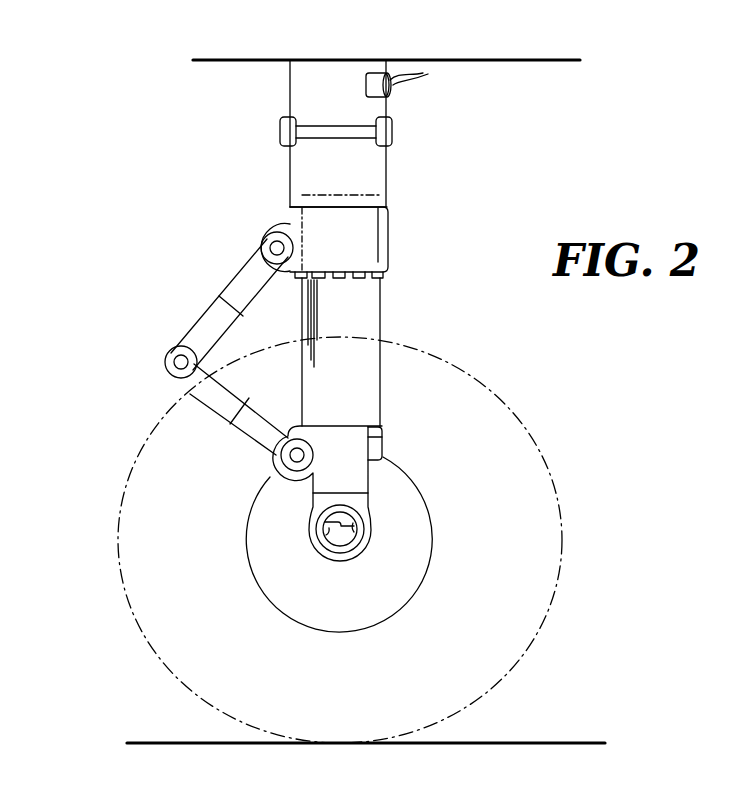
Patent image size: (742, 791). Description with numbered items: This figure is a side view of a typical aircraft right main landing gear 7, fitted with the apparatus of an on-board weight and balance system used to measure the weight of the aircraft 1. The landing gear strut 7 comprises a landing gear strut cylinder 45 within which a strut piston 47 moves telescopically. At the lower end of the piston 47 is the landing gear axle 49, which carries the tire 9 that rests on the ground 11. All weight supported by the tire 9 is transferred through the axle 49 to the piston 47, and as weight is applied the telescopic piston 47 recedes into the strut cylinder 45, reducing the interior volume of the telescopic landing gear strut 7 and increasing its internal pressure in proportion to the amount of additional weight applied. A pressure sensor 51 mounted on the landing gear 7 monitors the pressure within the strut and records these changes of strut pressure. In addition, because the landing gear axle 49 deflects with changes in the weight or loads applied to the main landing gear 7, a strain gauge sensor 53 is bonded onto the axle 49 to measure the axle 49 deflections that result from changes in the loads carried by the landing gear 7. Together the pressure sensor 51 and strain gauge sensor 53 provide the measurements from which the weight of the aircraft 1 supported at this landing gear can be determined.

The aircraft 1 is at (250, 58).
The landing gear strut cylinder 45 is at (299, 96).
The right main landing gear 7 is at (284, 150).
The pressure sensor 51 is at (390, 97).
The strut piston 47 is at (383, 298).
The landing gear axle 49 is at (312, 541).
The strain gauge sensor 53 is at (352, 518).
The tire 9 is at (556, 570).
The ground 11 is at (543, 742).